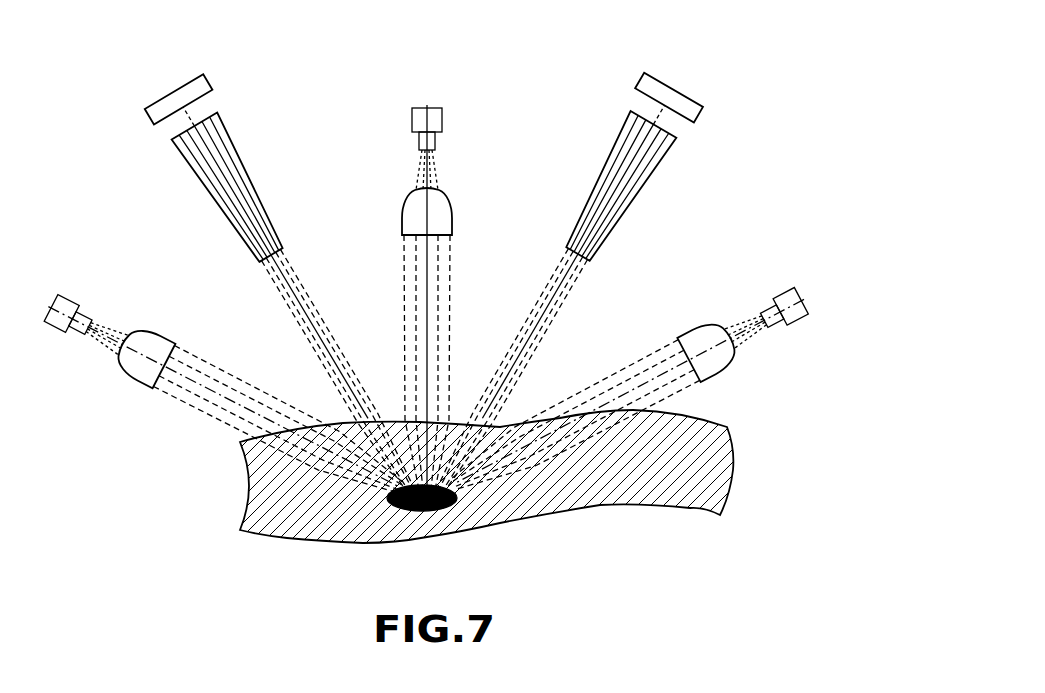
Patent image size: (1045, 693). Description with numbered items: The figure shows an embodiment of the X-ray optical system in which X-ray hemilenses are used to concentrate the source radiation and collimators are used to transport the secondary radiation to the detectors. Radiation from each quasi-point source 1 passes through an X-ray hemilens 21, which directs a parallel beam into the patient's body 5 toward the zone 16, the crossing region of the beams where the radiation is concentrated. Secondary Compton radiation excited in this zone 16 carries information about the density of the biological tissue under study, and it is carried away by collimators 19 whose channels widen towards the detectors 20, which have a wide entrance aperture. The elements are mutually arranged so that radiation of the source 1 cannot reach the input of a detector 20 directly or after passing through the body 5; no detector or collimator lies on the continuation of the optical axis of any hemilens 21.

The quasi-point source 1 is at (55, 317).
The patient's body 5 is at (253, 483).
The zone 16 is at (390, 503).
The collimator 19 is at (202, 178).
The detector 20 is at (150, 117).
The X-ray hemilens 21 is at (145, 372).